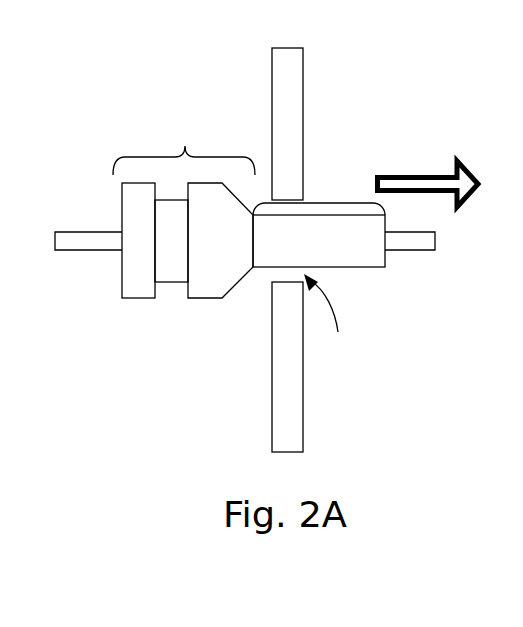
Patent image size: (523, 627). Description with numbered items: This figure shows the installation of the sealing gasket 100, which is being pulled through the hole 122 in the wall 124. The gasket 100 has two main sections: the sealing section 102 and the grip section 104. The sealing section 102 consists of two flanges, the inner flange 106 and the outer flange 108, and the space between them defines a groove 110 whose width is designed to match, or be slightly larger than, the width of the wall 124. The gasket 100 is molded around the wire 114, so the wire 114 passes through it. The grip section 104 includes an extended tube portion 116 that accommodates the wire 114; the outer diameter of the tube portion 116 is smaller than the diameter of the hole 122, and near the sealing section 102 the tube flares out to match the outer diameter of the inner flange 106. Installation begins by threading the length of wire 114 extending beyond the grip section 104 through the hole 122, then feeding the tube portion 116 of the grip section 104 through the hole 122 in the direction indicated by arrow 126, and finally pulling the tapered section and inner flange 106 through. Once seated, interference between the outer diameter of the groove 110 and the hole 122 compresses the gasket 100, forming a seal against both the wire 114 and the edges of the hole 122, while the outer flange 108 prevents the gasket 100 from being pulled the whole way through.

The gasket 100 is at (220, 137).
The sealing section 102 is at (185, 146).
The grip section 104 is at (317, 203).
The inner flange 106 is at (210, 298).
The outer flange 108 is at (123, 271).
The groove 110 is at (172, 270).
The wire 114 is at (432, 253).
The tube portion 116 is at (335, 253).
The hole 122 is at (332, 319).
The wall 124 is at (303, 393).
The arrow 126 is at (432, 175).